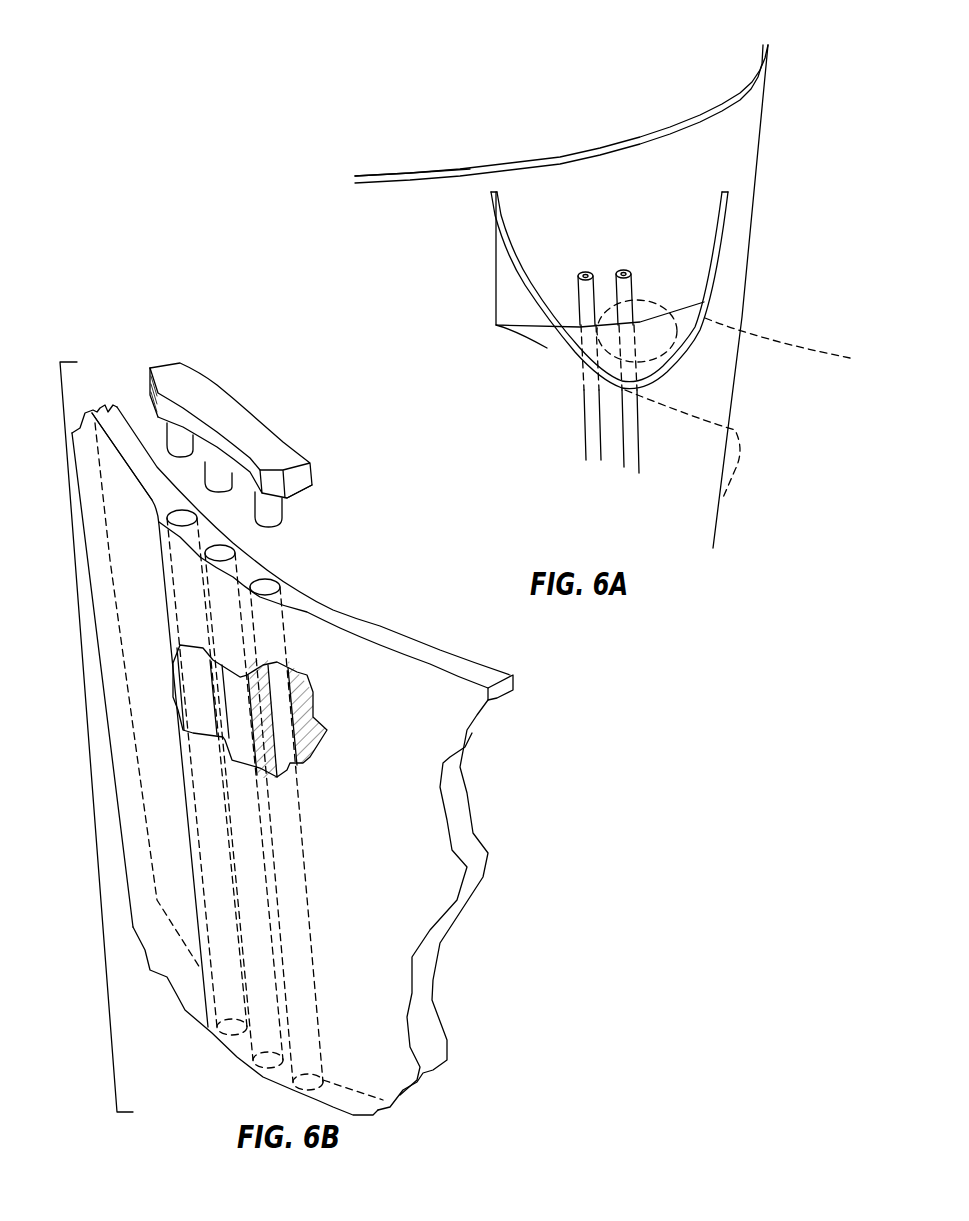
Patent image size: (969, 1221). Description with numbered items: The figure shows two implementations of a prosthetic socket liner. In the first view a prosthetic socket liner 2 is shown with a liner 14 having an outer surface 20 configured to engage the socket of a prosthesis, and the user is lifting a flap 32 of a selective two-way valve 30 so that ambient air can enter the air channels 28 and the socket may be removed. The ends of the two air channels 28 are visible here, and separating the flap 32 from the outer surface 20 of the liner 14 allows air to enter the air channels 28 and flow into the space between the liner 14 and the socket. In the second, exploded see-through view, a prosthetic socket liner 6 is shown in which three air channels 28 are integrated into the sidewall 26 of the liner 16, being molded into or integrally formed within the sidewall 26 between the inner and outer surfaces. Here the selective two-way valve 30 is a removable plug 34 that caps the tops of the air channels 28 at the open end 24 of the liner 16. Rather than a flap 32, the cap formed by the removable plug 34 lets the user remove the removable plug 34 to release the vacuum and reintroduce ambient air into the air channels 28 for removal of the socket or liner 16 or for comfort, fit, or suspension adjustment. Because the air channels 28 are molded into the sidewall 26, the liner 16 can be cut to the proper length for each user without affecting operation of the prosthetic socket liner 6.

In FIG. 6A, the prosthetic socket liner 2 is at (795, 199).
In FIG. 6B, the prosthetic socket liner 6 is at (572, 735).
In FIG. 6A, the liner 14 is at (752, 262).
In FIG. 6B, the liner 16 is at (477, 663).
In FIG. 6A, the outer surface 20 is at (421, 258).
In FIG. 6B, the outer surface 20 is at (384, 887).
In FIG. 6A, the open end 24 is at (577, 160).
In FIG. 6B, the open end 24 is at (410, 637).
In FIG. 6A, the sidewall 26 is at (410, 176).
In FIG. 6B, the sidewall 26 is at (107, 412).
In FIG. 6A, the air channels 28 is at (577, 293).
In FIG. 6B, the air channels 28 is at (196, 517).
In FIG. 6A, the selective two-way valve 30 is at (496, 302).
In FIG. 6B, the selective two-way valve 30 is at (313, 484).
In FIG. 6A, the flap 32 is at (517, 332).
In FIG. 6B, the removable plug 34 is at (260, 428).